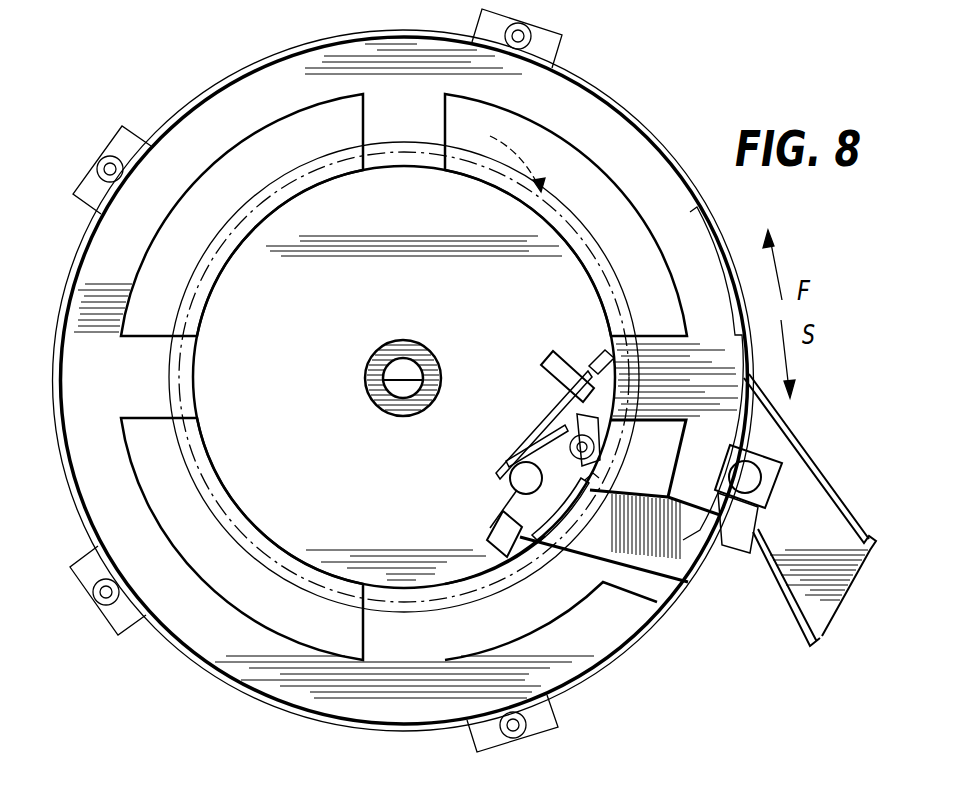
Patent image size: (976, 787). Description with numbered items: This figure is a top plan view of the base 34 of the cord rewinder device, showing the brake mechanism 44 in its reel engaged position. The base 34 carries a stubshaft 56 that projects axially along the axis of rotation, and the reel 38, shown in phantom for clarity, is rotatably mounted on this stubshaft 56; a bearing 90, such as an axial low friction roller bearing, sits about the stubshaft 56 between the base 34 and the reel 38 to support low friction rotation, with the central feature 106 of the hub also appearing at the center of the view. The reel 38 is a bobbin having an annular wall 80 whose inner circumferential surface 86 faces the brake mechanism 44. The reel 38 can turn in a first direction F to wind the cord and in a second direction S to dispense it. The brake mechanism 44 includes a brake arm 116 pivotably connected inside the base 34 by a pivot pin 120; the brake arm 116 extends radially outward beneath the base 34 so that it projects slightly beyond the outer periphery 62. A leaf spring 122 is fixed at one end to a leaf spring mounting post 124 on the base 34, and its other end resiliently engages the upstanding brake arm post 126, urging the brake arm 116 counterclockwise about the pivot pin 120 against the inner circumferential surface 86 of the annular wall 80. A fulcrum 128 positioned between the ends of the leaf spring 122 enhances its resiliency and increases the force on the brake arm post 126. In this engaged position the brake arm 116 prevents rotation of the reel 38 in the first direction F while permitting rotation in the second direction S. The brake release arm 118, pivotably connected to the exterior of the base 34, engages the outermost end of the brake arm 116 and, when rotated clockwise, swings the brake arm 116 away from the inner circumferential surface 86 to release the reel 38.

The base 34 is at (620, 648).
The reel 38 is at (501, 155).
The brake mechanism 44 is at (490, 520).
The stubshaft 56 is at (385, 382).
The outer periphery 62 is at (565, 694).
The annular wall 80 is at (246, 449).
The inner circumferential surface 86 is at (257, 540).
The bearing 90 is at (400, 342).
The bore 106 is at (418, 368).
The brake arm 116 is at (522, 520).
The brake release arm 118 is at (745, 530).
The pivot pin 120 is at (552, 442).
The leaf spring 122 is at (567, 397).
The leaf spring mounting post 124 is at (592, 354).
The brake arm post 126 is at (510, 474).
The fulcrum 128 is at (548, 362).